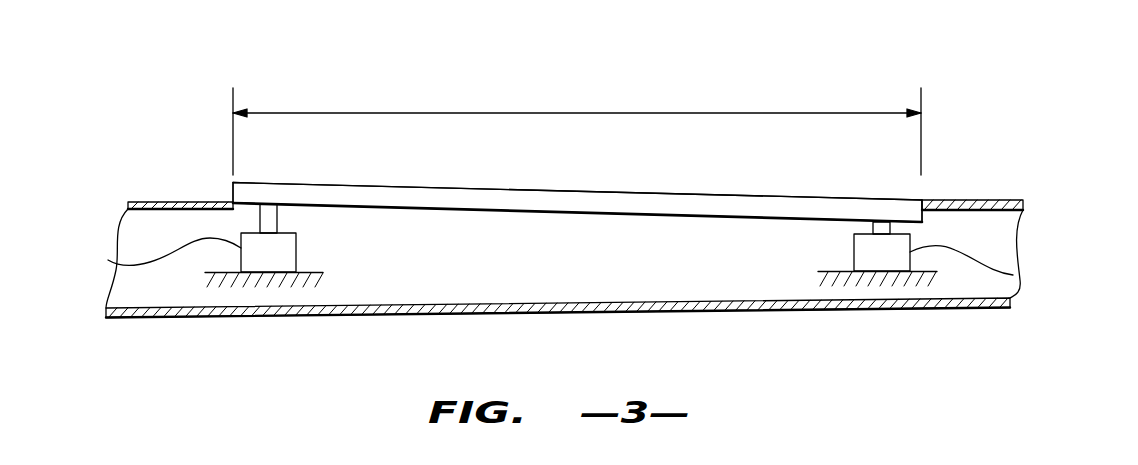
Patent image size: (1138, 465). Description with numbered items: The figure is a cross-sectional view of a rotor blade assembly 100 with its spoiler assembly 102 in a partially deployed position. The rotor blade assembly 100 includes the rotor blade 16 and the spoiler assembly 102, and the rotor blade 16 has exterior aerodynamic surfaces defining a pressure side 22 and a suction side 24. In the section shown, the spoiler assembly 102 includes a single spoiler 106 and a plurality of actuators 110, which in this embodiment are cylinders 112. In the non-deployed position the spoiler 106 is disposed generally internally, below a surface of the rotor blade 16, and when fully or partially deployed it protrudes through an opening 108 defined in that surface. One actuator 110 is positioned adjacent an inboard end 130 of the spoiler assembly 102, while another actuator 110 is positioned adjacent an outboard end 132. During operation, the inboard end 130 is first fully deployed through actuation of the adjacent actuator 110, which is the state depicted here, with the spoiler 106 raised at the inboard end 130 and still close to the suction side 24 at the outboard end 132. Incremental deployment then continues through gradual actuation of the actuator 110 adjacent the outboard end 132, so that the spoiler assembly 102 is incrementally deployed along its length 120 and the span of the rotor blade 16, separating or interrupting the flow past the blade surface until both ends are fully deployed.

The rotor blade assembly 100 is at (1028, 119).
The spoiler assembly 102 is at (699, 178).
The spoiler 106 is at (485, 187).
The opening 108 is at (318, 222).
The actuator 110 is at (320, 257).
The cylinder 112 is at (108, 260).
The length of the spoiler assembly 120 is at (633, 112).
The inboard end 130 is at (232, 193).
The outboard end 132 is at (922, 216).
The rotor blade 16 is at (1012, 196).
The pressure side 22 is at (208, 318).
The suction side 24 is at (152, 201).